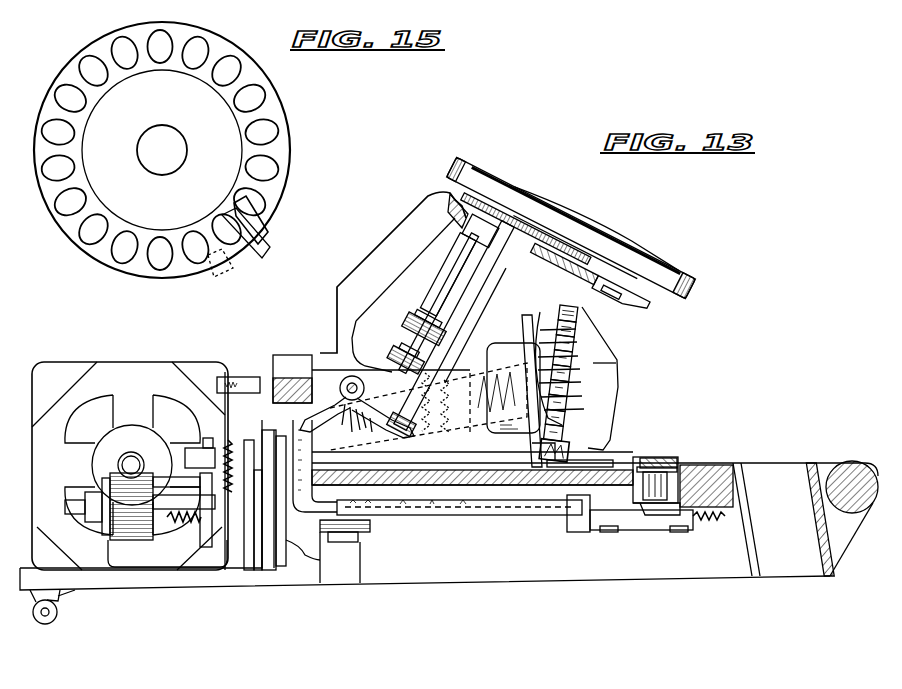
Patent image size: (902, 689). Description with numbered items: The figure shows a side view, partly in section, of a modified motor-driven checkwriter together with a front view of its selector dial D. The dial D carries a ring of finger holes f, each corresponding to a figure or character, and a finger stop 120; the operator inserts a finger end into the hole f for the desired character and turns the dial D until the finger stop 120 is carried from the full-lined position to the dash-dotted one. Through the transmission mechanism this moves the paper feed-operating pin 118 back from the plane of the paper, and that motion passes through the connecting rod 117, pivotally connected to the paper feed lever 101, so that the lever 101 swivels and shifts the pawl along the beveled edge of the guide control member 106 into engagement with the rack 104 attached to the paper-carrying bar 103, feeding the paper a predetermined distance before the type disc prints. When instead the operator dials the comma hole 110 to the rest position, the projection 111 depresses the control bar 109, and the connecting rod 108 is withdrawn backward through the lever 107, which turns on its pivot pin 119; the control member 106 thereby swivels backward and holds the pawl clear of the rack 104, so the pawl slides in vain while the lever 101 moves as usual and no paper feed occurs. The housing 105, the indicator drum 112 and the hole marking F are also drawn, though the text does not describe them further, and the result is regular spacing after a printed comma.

In FIG. 15, the finger holes of dial F is at (262, 125).
In FIG. 15, the finger hole f is at (276, 133).
In FIG. 15, the dial D is at (290, 160).
In FIG. 13, the dial D is at (682, 268).
In FIG. 15, the comma hole 110 is at (332, 202).
In FIG. 15, the finger stop 120 is at (252, 237).
In FIG. 13, the projection 111 is at (555, 226).
In FIG. 13, the control bar 109 is at (488, 275).
In FIG. 13, the indicator drum 112 is at (603, 332).
In FIG. 13, the housing 105 is at (345, 352).
In FIG. 13, the lever 107 is at (300, 378).
In FIG. 13, the pivot pin 119 is at (404, 405).
In FIG. 13, the rack 104 is at (656, 460).
In FIG. 13, the paper-carrying bar 103 is at (724, 439).
In FIG. 13, the connecting rod 117 is at (340, 540).
In FIG. 13, the paper feed-operating pin 118 is at (367, 532).
In FIG. 13, the paper feed lever 101 is at (418, 517).
In FIG. 13, the connecting rod 108 is at (578, 533).
In FIG. 13, the guide control member 106 is at (658, 505).